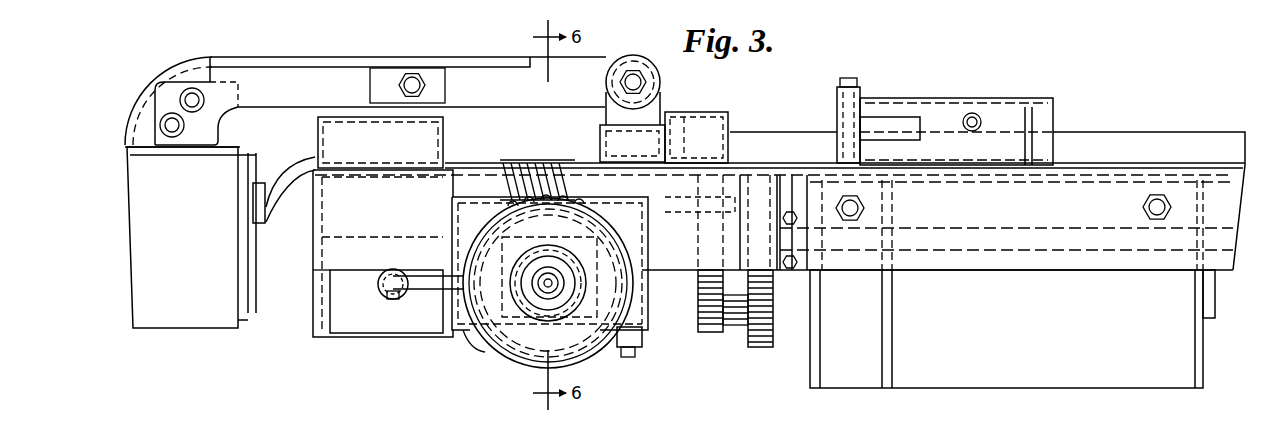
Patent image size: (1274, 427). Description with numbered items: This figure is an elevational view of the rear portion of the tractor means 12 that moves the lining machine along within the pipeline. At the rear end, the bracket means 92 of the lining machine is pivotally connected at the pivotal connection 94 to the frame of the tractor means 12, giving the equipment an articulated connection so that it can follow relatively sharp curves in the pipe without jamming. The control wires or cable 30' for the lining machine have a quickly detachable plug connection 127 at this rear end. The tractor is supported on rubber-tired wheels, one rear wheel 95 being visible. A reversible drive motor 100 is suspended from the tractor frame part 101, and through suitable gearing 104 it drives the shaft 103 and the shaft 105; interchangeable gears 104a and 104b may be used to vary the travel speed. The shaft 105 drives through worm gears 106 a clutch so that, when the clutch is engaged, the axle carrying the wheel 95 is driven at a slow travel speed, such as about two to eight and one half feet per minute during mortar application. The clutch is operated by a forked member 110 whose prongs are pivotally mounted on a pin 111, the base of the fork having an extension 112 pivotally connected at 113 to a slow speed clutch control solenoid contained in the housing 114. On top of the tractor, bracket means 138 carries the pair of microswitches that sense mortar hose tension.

The tractor means 12 is at (1111, 146).
The control wires or cable 30' is at (286, 177).
The bracket means 92 is at (238, 92).
The pivotal connection 94 is at (648, 82).
The rear tractor wheel 95 is at (517, 362).
The reversible drive motor 100 is at (966, 382).
The tractor frame part 101 is at (793, 187).
The shaft 103 is at (927, 228).
The gearing 104 is at (694, 314).
The interchangeable gear 104a is at (717, 334).
The interchangeable gear 104b is at (726, 112).
The shaft 105 is at (688, 198).
The worm gears 106 is at (562, 160).
The forked member 110 is at (478, 347).
The pin 111 is at (629, 350).
The extension 112 is at (431, 291).
The pivotal connection 113 is at (387, 299).
The housing 114 is at (332, 314).
The quickly detachable plug connection 127 is at (263, 226).
The bracket means 138 is at (917, 117).